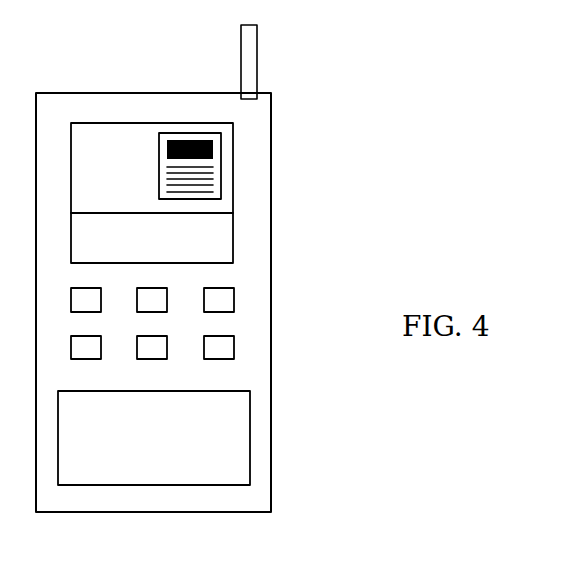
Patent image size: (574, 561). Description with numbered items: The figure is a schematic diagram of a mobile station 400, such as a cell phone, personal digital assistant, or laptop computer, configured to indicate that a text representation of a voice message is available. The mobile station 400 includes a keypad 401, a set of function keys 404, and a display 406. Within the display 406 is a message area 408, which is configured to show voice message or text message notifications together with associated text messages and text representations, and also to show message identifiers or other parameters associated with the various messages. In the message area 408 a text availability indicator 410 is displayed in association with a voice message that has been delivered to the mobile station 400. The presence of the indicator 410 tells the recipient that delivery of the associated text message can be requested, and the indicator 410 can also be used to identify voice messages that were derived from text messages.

The mobile station 400 is at (362, 240).
The keypad 401 is at (250, 438).
The function keys 404 is at (234, 305).
The display 406 is at (233, 190).
The message area 408 is at (233, 157).
The text availability indicator 410 is at (159, 133).